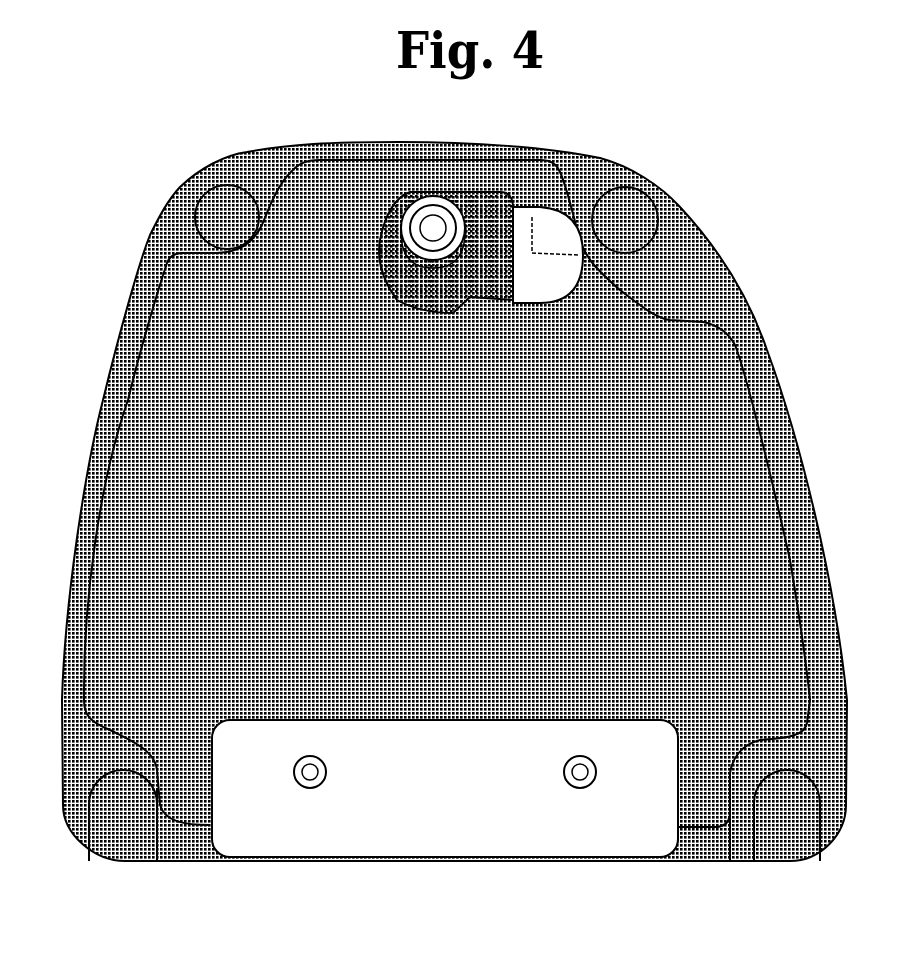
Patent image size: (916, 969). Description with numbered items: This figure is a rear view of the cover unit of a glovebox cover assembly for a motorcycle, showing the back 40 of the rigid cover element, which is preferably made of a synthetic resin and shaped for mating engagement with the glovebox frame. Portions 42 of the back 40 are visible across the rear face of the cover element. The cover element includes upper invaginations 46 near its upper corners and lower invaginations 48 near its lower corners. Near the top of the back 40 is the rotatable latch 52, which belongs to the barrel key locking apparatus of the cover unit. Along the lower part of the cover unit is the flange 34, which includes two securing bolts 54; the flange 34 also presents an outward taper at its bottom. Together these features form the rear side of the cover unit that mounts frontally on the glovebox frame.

The flange 34 is at (428, 792).
The back 40 is at (708, 298).
The portions 42 is at (707, 503).
The upper invaginations 46 is at (223, 213).
The lower invaginations 48 is at (131, 843).
The rotatable latch 52 is at (544, 225).
The securing bolts 54 is at (290, 770).